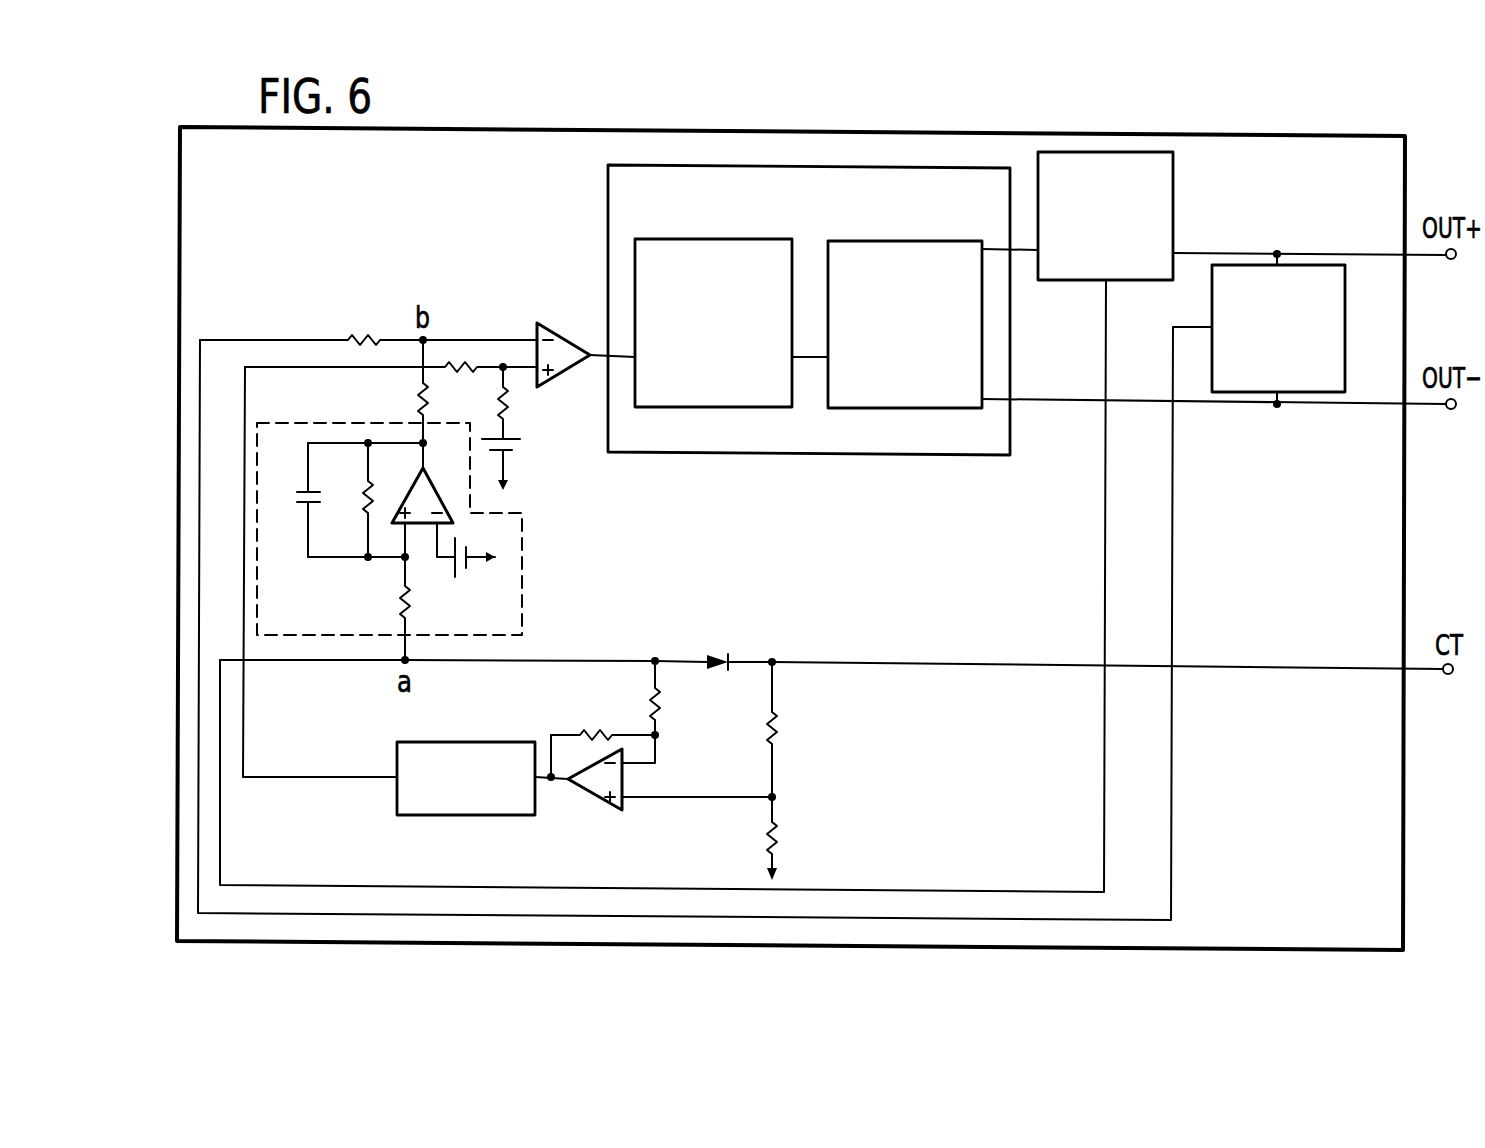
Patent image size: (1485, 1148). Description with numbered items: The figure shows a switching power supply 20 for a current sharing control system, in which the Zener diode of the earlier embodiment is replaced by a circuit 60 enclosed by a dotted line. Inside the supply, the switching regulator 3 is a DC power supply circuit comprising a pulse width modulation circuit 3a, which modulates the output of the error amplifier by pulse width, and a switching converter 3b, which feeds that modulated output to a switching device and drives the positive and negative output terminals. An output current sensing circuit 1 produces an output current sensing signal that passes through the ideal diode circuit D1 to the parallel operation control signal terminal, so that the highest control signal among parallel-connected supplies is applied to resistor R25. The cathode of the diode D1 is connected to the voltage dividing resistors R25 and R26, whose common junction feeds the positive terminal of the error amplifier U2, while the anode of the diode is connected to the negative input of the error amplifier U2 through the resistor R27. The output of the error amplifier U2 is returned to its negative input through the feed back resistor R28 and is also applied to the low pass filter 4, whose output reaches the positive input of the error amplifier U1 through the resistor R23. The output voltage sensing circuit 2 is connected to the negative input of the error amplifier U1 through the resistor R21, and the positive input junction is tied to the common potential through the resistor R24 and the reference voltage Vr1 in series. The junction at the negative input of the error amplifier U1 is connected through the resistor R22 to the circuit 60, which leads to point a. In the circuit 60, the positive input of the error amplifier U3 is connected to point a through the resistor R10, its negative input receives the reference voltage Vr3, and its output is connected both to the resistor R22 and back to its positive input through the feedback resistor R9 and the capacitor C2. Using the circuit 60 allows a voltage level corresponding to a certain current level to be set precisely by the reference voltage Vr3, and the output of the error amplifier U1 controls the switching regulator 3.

The switching power supply 20 is at (659, 130).
The switching regulator 3 is at (608, 201).
The pulse width modulation circuit 3a is at (707, 239).
The switching converter 3b is at (914, 241).
The output current sensing circuit 1 is at (1175, 191).
The output voltage sensing circuit 2 is at (1347, 326).
The low pass filter 4 is at (462, 818).
The circuit 60 is at (422, 541).
The error amplifier U1 is at (529, 342).
The error amplifier U2 is at (653, 793).
The error amplifier U3 is at (427, 500).
The resistor R21 is at (311, 322).
The resistor R22 is at (397, 391).
The resistor R23 is at (374, 385).
The resistor R24 is at (530, 403).
The voltage dividing resistor R25 is at (798, 729).
The voltage dividing resistor R26 is at (798, 838).
The resistor R27 is at (667, 712).
The feed back resistor R28 is at (603, 736).
The feedback resistor R9 is at (352, 500).
The resistor R10 is at (379, 608).
The capacitor C2 is at (292, 500).
The ideal diode circuit D1 is at (716, 644).
The reference voltage Vr1 is at (529, 459).
The reference voltage Vr3 is at (468, 578).